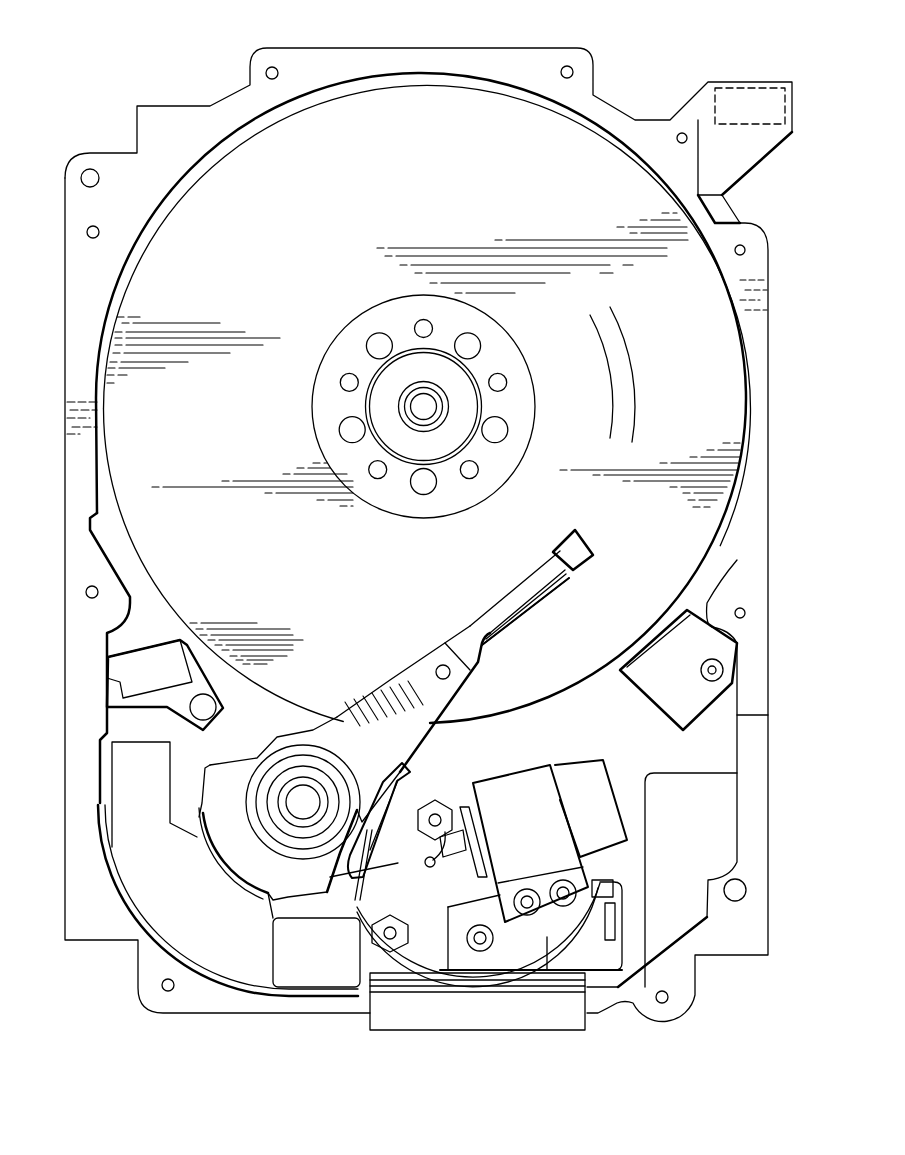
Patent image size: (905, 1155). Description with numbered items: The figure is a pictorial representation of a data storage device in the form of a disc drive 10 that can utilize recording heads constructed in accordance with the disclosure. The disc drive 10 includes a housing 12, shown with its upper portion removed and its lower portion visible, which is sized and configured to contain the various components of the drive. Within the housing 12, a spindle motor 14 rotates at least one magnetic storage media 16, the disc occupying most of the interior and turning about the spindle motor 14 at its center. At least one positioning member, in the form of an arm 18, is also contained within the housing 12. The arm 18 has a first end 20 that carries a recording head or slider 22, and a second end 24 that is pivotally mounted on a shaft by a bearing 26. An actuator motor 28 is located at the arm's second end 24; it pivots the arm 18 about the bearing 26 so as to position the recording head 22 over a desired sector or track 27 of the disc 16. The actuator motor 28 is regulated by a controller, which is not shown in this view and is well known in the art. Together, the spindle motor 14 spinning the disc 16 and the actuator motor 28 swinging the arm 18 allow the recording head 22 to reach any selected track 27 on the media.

The disc drive 10 is at (114, 90).
The housing 12 is at (550, 60).
The spindle motor 14 is at (418, 408).
The magnetic storage media 16 is at (316, 212).
The arm 18 is at (410, 688).
The first end 20 is at (522, 580).
The recording head 22 is at (575, 550).
The second end 24 is at (317, 735).
The bearing 26 is at (292, 790).
The track 27 is at (621, 381).
The actuator motor 28 is at (175, 912).